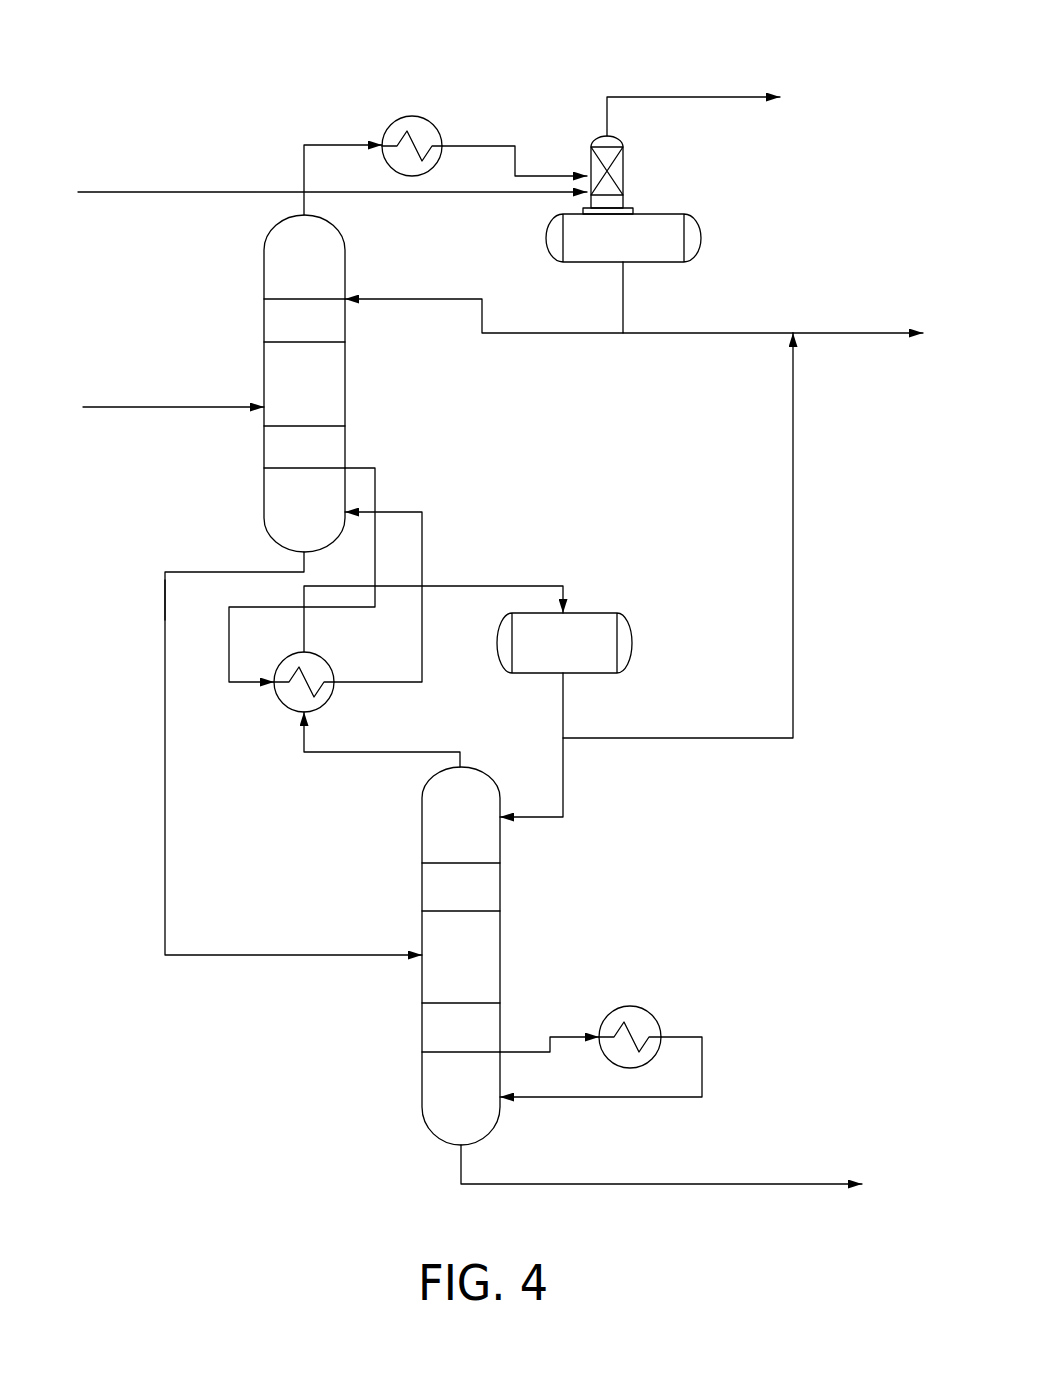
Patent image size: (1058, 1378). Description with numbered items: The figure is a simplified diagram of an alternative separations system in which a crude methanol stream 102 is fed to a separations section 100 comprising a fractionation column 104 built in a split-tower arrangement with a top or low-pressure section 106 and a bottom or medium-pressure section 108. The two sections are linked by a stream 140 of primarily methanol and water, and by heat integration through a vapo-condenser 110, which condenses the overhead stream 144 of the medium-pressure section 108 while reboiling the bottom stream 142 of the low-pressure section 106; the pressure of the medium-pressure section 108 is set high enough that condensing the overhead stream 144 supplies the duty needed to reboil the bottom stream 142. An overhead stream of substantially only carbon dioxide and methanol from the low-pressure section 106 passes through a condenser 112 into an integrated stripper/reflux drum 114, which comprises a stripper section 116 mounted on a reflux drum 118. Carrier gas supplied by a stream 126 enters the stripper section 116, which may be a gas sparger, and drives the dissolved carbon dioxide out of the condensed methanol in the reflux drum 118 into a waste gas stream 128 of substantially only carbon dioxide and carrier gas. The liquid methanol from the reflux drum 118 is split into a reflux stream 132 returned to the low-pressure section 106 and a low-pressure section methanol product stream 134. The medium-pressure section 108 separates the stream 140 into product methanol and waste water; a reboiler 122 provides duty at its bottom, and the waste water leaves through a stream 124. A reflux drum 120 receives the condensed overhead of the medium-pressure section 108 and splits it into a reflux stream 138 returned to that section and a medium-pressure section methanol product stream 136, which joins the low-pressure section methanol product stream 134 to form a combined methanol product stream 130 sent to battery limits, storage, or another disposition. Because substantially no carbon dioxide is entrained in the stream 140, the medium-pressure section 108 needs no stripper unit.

The separations section 100 is at (243, 1110).
The crude methanol stream 102 is at (118, 407).
The fractionation column 104 is at (143, 596).
The low-pressure section 106 is at (264, 348).
The medium-pressure section 108 is at (422, 918).
The vapo-condenser 110 is at (277, 701).
The condenser 112 is at (397, 117).
The integrated stripper/reflux drum 114 is at (707, 203).
The stripper section 116 is at (588, 157).
The reflux drum 118 is at (700, 245).
The reflux drum 120 is at (603, 612).
The reboiler 122 is at (633, 1005).
The waste water stream 124 is at (792, 1184).
The carrier gas stream 126 is at (160, 192).
The waste gas stream 128 is at (726, 94).
The combined methanol product stream 130 is at (870, 334).
The reflux stream 132 is at (525, 334).
The LP section methanol product stream 134 is at (700, 334).
The MP section methanol product stream 136 is at (793, 574).
The reflux stream 138 is at (566, 771).
The stream 140 is at (165, 741).
The bottom stream 142 is at (376, 486).
The overhead stream 144 is at (352, 753).